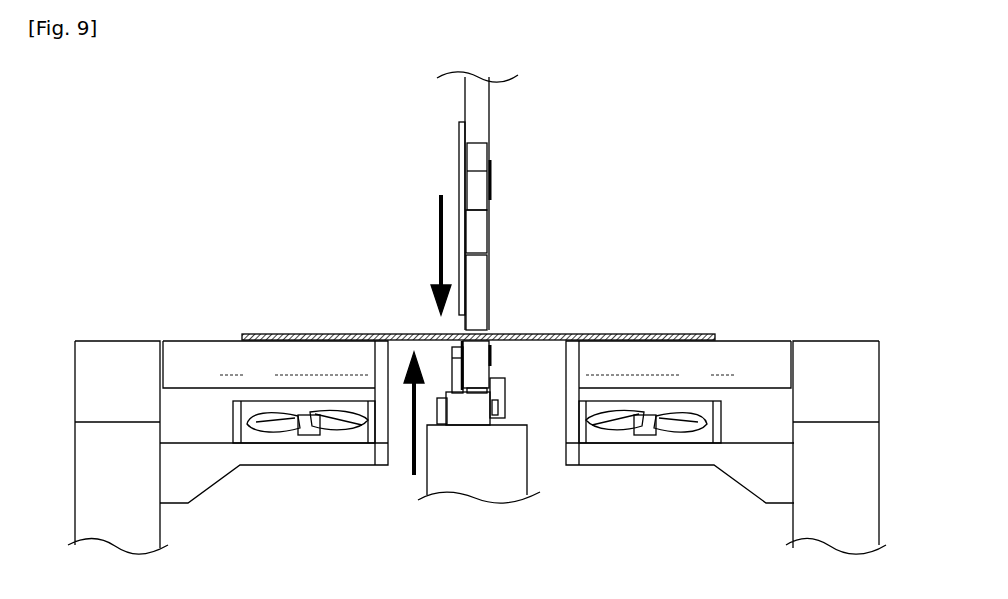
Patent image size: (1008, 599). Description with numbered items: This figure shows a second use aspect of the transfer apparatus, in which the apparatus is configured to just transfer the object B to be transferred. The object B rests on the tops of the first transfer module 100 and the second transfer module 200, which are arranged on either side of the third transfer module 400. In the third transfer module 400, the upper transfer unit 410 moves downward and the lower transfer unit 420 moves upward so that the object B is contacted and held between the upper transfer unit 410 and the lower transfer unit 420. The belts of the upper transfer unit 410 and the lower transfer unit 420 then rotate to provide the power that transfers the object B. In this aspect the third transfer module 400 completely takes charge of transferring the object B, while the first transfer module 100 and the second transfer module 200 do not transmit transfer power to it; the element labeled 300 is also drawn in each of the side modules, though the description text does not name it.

The first transfer module 100 is at (205, 352).
The second transfer module 200 is at (749, 352).
The fan 300 is at (306, 428).
The third transfer module 400 is at (573, 287).
The upper transfer unit 410 is at (488, 233).
The lower transfer unit 420 is at (482, 362).
The object to be transferred B is at (320, 333).